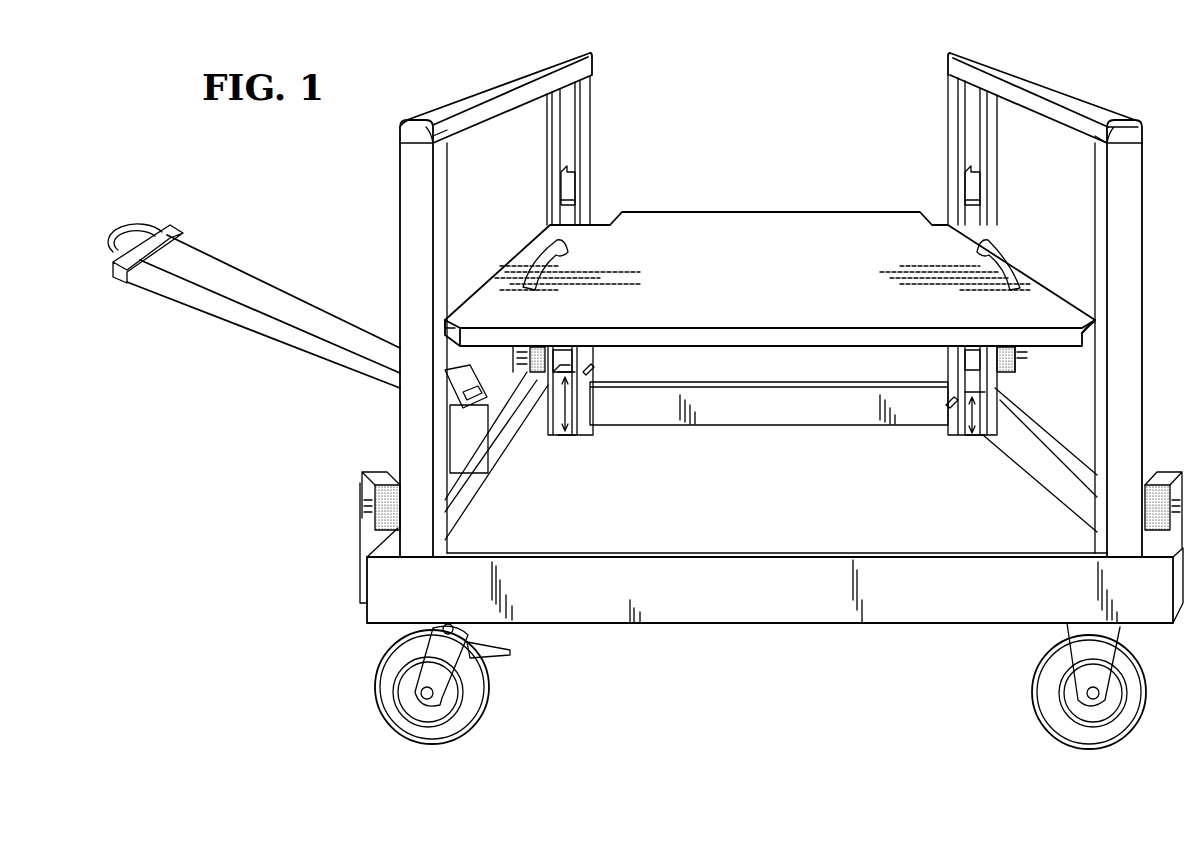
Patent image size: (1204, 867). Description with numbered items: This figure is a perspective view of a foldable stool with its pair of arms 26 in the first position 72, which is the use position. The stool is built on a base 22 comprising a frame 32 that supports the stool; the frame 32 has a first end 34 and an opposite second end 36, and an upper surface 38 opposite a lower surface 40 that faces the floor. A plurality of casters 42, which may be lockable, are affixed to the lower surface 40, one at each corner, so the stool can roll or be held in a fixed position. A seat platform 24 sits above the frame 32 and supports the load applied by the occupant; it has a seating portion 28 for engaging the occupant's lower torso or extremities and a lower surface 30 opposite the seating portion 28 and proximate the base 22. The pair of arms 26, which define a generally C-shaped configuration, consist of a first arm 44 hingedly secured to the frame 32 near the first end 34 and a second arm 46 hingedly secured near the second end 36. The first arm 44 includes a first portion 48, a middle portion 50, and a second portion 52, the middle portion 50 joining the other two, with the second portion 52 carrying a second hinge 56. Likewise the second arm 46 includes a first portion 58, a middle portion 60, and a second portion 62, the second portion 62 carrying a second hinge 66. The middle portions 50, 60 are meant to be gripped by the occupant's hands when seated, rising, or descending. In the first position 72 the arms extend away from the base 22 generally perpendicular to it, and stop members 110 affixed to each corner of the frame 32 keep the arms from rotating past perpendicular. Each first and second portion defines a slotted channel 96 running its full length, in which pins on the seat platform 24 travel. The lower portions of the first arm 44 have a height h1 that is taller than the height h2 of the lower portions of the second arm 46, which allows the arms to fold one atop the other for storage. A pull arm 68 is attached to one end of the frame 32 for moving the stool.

The base 22 is at (356, 612).
The seat platform 24 is at (770, 215).
The pair of arms 26 is at (496, 284).
The seating portion 28 is at (770, 268).
The lower surface 30 is at (790, 350).
The frame 32 is at (771, 589).
The first end 34 is at (368, 620).
The second end 36 is at (1186, 630).
The upper surface 38 is at (771, 589).
The lower surface 40 is at (695, 624).
The casters 42 is at (497, 678).
The first arm 44 is at (396, 338).
The second arm 46 is at (1143, 338).
The first portion 48 is at (399, 188).
The middle portion 50 is at (455, 100).
The second portion 52 is at (597, 125).
The second hinge 56 is at (595, 370).
The first portion 58 is at (1144, 176).
The middle portion 60 is at (1060, 86).
The second portion 62 is at (1000, 165).
The second hinge 66 is at (950, 428).
The pull arm 68 is at (215, 298).
The first position 72 is at (755, 69).
The channel 96 is at (565, 141).
The stop members 110 is at (360, 520).
The height h1 is at (575, 408).
The height h2 is at (972, 443).